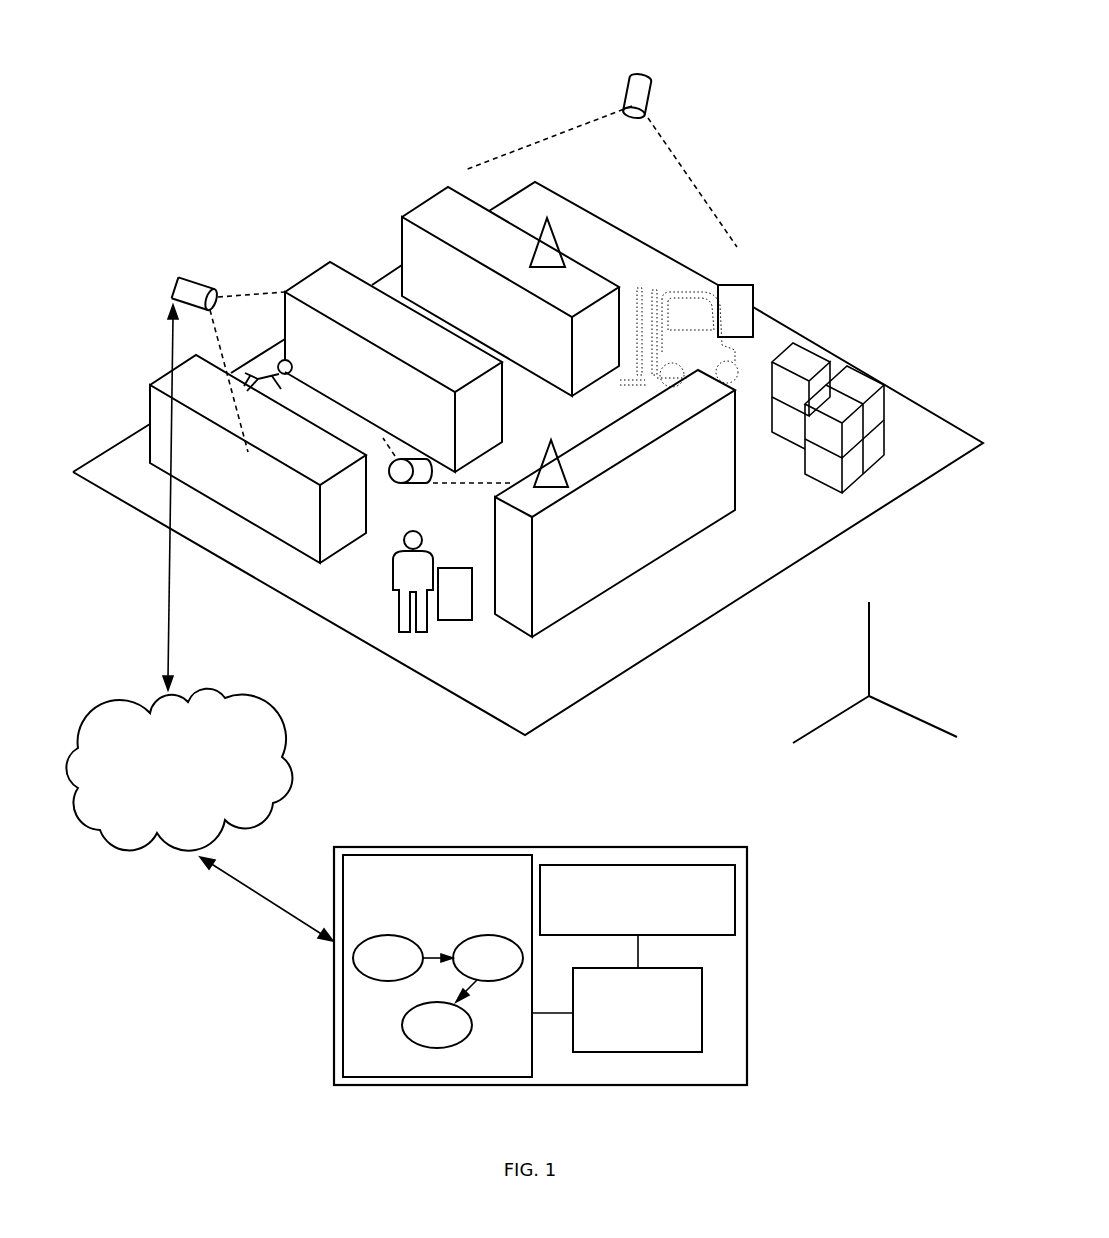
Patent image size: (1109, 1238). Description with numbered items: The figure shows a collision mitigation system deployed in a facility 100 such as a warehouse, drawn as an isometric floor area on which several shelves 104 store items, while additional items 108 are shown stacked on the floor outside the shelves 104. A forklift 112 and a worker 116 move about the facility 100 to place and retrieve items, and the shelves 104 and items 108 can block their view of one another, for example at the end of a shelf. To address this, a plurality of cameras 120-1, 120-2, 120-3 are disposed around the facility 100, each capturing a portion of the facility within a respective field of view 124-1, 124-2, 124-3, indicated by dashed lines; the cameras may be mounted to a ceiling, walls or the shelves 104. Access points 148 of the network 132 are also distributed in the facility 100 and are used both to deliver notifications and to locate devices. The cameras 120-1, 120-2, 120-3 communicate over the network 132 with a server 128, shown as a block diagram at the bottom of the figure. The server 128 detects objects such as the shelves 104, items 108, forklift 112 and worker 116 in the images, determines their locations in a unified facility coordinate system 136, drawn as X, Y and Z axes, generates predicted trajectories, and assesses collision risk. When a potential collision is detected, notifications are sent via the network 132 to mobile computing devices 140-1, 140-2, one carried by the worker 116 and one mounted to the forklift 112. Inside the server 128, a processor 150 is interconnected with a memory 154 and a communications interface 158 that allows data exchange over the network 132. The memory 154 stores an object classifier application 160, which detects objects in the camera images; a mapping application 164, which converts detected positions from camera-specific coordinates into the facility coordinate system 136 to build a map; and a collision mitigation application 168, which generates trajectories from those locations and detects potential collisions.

The facility 100 is at (326, 178).
The shelves 104 is at (436, 211).
The items 108 is at (860, 387).
The forklift 112 is at (656, 290).
The worker 116 is at (405, 637).
The camera 120-1 is at (172, 292).
The camera 120-2 is at (397, 483).
The camera 120-3 is at (644, 76).
The field of view 124-1 is at (240, 296).
The field of view 124-2 is at (472, 484).
The field of view 124-3 is at (678, 158).
The server 128 is at (603, 966).
The network 132 is at (168, 771).
The facility coordinate system 136 is at (884, 744).
The mobile computing device 140-1 is at (453, 623).
The mobile computing device 140-2 is at (756, 296).
The access point 148 is at (548, 224).
The processor 150 is at (620, 1006).
The memory 154 is at (419, 884).
The communications interface 158 is at (620, 897).
The object classifier application 160 is at (370, 967).
The mapping application 164 is at (470, 967).
The collision mitigation application 168 is at (419, 1034).